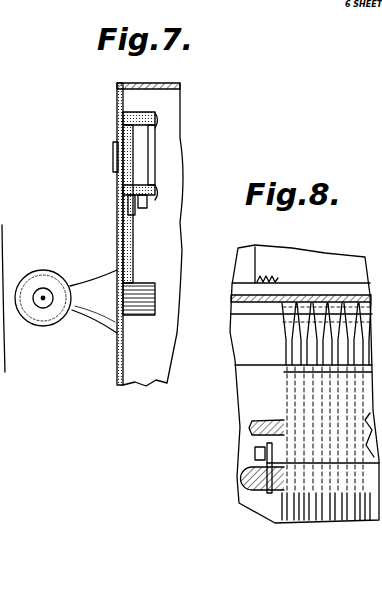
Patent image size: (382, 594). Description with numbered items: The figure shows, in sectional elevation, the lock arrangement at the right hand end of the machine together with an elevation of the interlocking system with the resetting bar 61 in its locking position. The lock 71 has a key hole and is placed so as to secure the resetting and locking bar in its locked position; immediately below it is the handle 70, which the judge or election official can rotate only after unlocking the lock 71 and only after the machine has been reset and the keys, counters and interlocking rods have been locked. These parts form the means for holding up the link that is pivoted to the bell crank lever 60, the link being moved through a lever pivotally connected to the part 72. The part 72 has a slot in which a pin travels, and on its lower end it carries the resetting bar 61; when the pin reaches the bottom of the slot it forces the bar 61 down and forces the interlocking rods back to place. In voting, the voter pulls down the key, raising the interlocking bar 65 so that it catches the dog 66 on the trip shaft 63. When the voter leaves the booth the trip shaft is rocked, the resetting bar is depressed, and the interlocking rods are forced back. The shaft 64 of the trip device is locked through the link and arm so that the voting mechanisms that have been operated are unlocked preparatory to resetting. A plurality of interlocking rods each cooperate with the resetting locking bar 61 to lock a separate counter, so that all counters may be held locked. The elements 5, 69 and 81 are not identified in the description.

In FIG. 7, the slide bracket 5 is at (117, 124).
In FIG. 7, the lock 71 is at (113, 162).
In FIG. 7, the bell crank lever 60 is at (150, 234).
In FIG. 7, the handle 70 is at (85, 318).
In FIG. 8, the part 72 is at (258, 263).
In FIG. 8, the resetting bar 61 is at (318, 296).
In FIG. 8, the upper fingers 69 is at (300, 325).
In FIG. 8, the interlocking bar 65 is at (290, 373).
In FIG. 8, the dog 66 is at (283, 410).
In FIG. 8, the trip shaft 63 is at (254, 450).
In FIG. 8, the shaft of the trip device 64 is at (247, 477).
In FIG. 8, the bottom teeth 81 is at (268, 492).